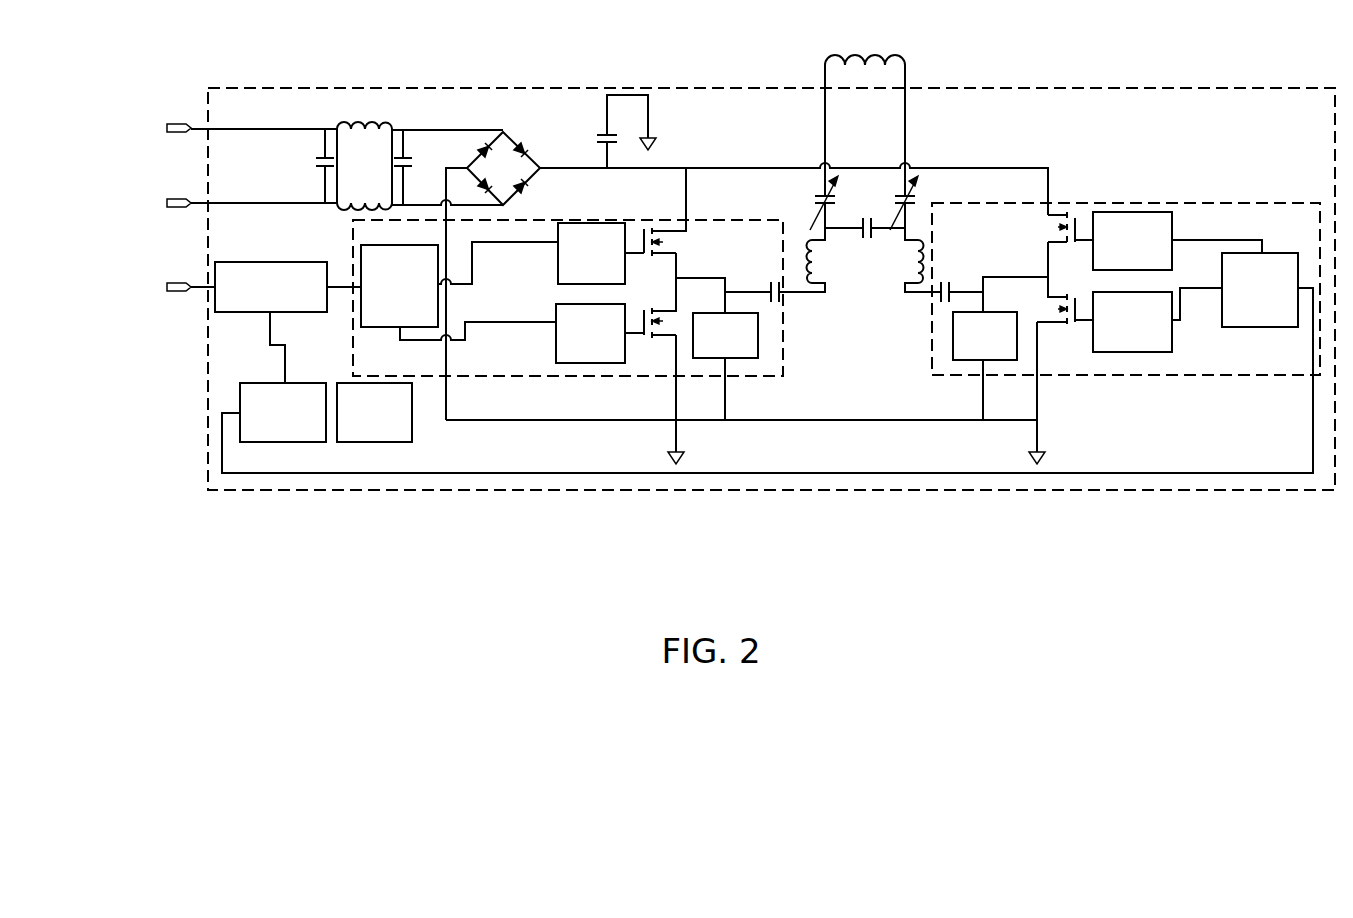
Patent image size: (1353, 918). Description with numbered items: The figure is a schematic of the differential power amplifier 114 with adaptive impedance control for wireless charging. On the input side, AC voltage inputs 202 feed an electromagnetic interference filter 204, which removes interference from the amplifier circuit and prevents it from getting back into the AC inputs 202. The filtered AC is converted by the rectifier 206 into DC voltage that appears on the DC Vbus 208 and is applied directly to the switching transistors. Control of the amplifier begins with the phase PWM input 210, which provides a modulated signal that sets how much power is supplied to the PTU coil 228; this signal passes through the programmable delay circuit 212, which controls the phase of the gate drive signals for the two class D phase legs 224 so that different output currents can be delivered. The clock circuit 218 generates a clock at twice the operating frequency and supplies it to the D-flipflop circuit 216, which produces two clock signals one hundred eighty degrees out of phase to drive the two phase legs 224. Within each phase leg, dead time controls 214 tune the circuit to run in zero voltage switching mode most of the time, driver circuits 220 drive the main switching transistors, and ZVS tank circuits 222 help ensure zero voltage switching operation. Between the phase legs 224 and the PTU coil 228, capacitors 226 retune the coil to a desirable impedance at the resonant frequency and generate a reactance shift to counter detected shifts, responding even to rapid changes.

The differential power amplifier 114 is at (771, 354).
The AC voltage inputs 202 is at (146, 128).
The electromagnetic interference (EMI) filter 204 is at (362, 110).
The rectifier 206 is at (503, 94).
The DC Vbus 208 is at (745, 165).
The phase pulse width modulator (PWM) input 210 is at (146, 257).
The programmable delay circuit 212 is at (280, 262).
The dead time controls 214 is at (363, 246).
The D-flipflop circuit 216 is at (291, 442).
The clock circuit 218 is at (400, 442).
The driver circuits 220 is at (864, 287).
The zero voltage switching (ZVS) tank circuits 222 is at (745, 358).
The class D phase legs 224 is at (540, 220).
The capacitors 226 is at (812, 198).
The PTU coil 228 is at (905, 118).